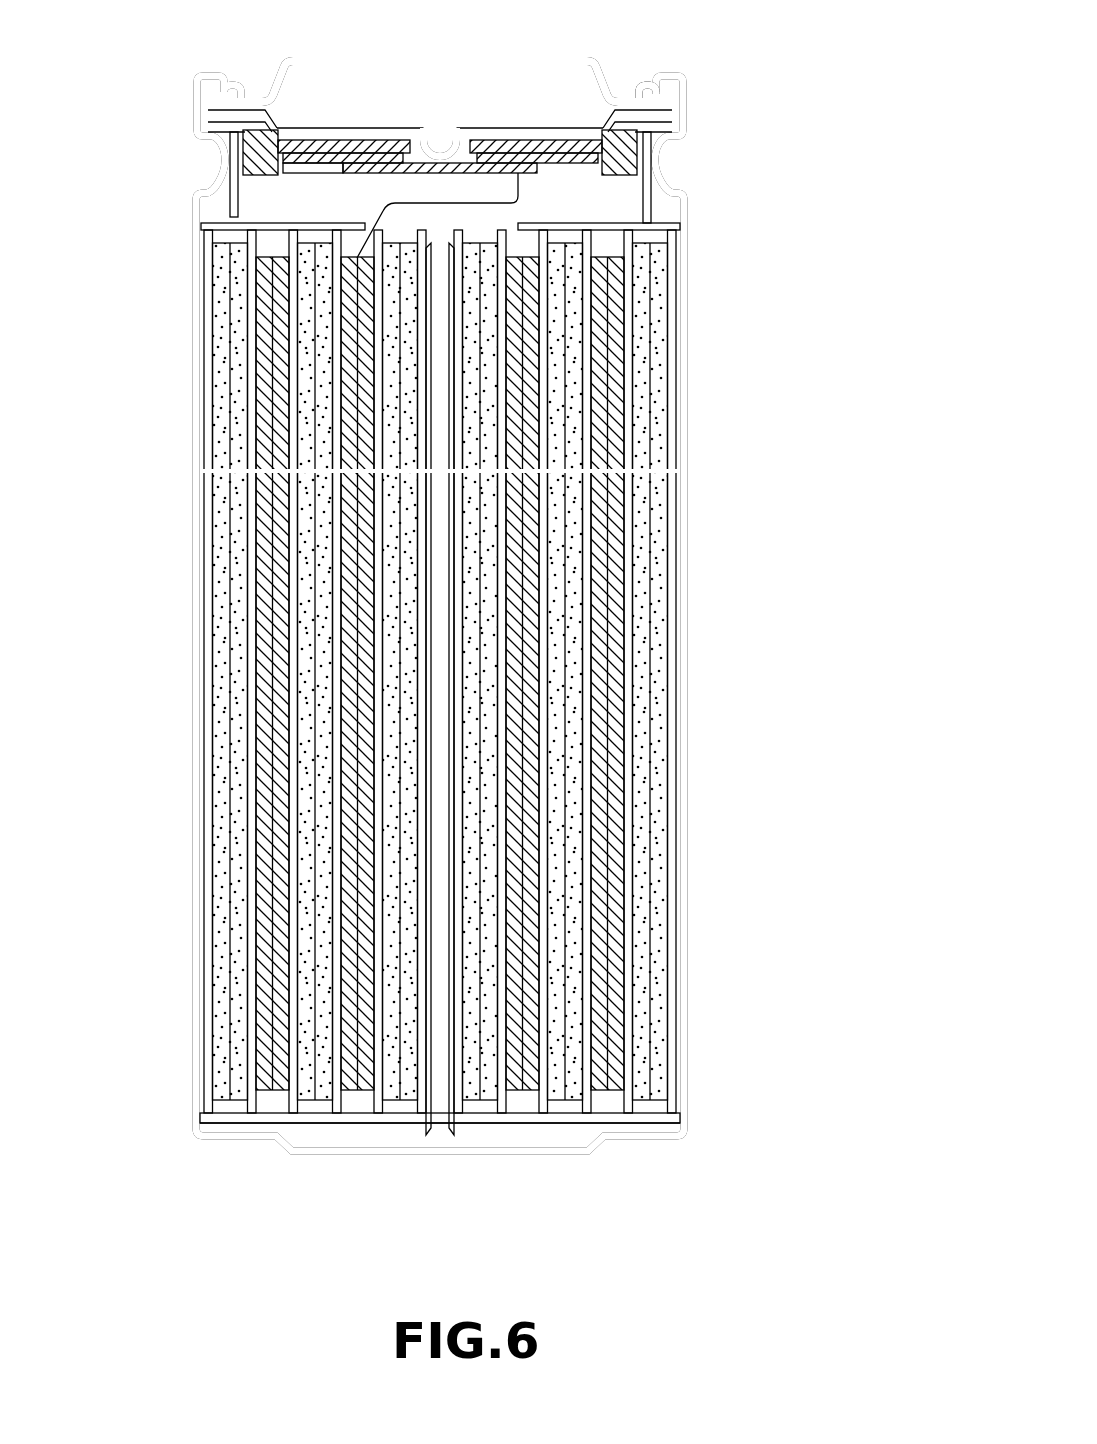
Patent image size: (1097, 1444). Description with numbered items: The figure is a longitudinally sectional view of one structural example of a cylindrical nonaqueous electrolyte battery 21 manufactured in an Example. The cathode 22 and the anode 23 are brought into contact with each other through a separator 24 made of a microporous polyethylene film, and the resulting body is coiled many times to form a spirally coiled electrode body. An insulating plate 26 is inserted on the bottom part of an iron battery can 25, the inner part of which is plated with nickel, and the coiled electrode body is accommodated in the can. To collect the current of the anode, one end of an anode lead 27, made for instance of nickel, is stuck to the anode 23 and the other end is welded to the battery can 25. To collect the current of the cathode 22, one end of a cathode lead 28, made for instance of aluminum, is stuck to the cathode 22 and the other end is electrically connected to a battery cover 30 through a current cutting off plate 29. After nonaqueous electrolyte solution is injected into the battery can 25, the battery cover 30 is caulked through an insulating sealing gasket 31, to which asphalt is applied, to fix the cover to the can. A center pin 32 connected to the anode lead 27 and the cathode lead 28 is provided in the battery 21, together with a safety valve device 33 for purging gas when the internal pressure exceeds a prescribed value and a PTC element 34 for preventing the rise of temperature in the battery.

The nonaqueous electrolyte battery 21 is at (510, 607).
The cathode 22 is at (612, 495).
The anode 23 is at (650, 655).
The separator 24 is at (635, 568).
The battery can 25 is at (683, 747).
The insulating plate 26 is at (655, 1117).
The anode lead 27 is at (317, 1143).
The cathode lead 28 is at (540, 170).
The current cutting off plate 29 is at (522, 192).
The battery cover 30 is at (483, 57).
The insulating sealing gasket 31 is at (669, 88).
The center pin 32 is at (430, 378).
The safety valve device 33 is at (373, 127).
The PTC element 34 is at (670, 112).